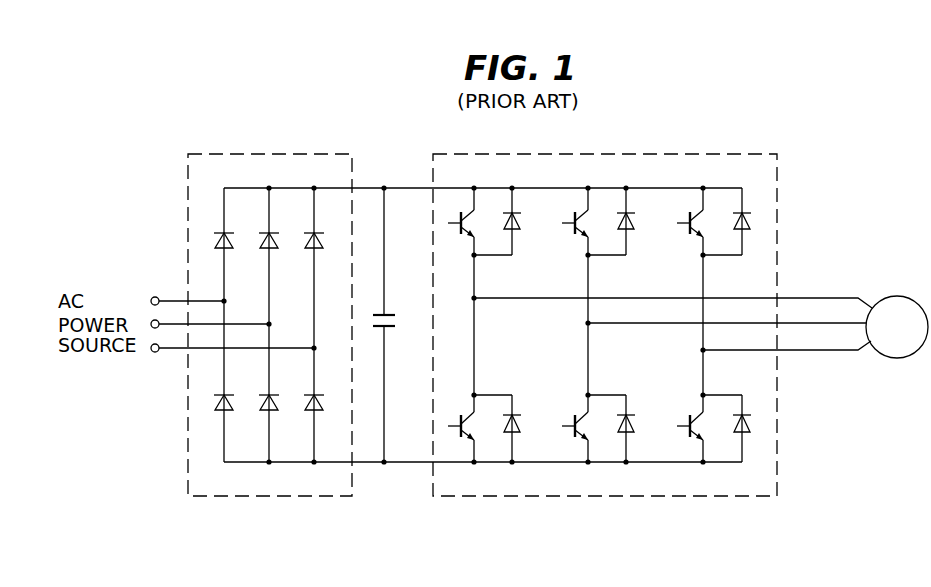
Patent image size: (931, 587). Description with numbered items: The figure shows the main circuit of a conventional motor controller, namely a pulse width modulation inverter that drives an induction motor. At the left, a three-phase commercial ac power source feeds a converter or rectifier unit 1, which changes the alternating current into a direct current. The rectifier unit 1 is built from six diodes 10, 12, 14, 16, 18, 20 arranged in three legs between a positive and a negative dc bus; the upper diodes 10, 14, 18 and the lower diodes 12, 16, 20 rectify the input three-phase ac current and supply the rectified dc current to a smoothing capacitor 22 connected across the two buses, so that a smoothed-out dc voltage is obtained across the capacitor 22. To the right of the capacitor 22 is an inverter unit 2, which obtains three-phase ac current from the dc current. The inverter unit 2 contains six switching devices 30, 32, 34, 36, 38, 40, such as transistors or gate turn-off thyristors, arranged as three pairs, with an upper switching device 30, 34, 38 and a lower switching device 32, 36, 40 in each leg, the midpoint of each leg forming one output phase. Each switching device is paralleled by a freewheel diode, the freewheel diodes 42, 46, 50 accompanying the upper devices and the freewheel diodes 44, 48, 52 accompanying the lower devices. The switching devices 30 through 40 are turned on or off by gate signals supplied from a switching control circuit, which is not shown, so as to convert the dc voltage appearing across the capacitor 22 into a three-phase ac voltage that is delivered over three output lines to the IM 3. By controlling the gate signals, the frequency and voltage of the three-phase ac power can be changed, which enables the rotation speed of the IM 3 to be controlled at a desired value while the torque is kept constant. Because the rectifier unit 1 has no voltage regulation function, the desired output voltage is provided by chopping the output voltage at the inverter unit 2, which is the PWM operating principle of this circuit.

The converter or rectifier unit 1 is at (265, 154).
The inverter unit 2 is at (673, 496).
The IM 3 is at (897, 358).
The diode 10 is at (230, 245).
The diode 12 is at (230, 407).
The diode 14 is at (275, 245).
The diode 16 is at (275, 407).
The diode 18 is at (320, 245).
The diode 20 is at (320, 407).
The smoothing capacitor 22 is at (390, 328).
The switching device 30 is at (456, 232).
The switching device 32 is at (448, 426).
The switching device 34 is at (570, 232).
The switching device 36 is at (562, 428).
The switching device 38 is at (685, 232).
The switching device 40 is at (677, 428).
The freewheel diode 42 is at (517, 226).
The freewheel diode 44 is at (517, 428).
The freewheel diode 46 is at (631, 226).
The freewheel diode 48 is at (631, 428).
The freewheel diode 50 is at (747, 226).
The freewheel diode 52 is at (747, 428).